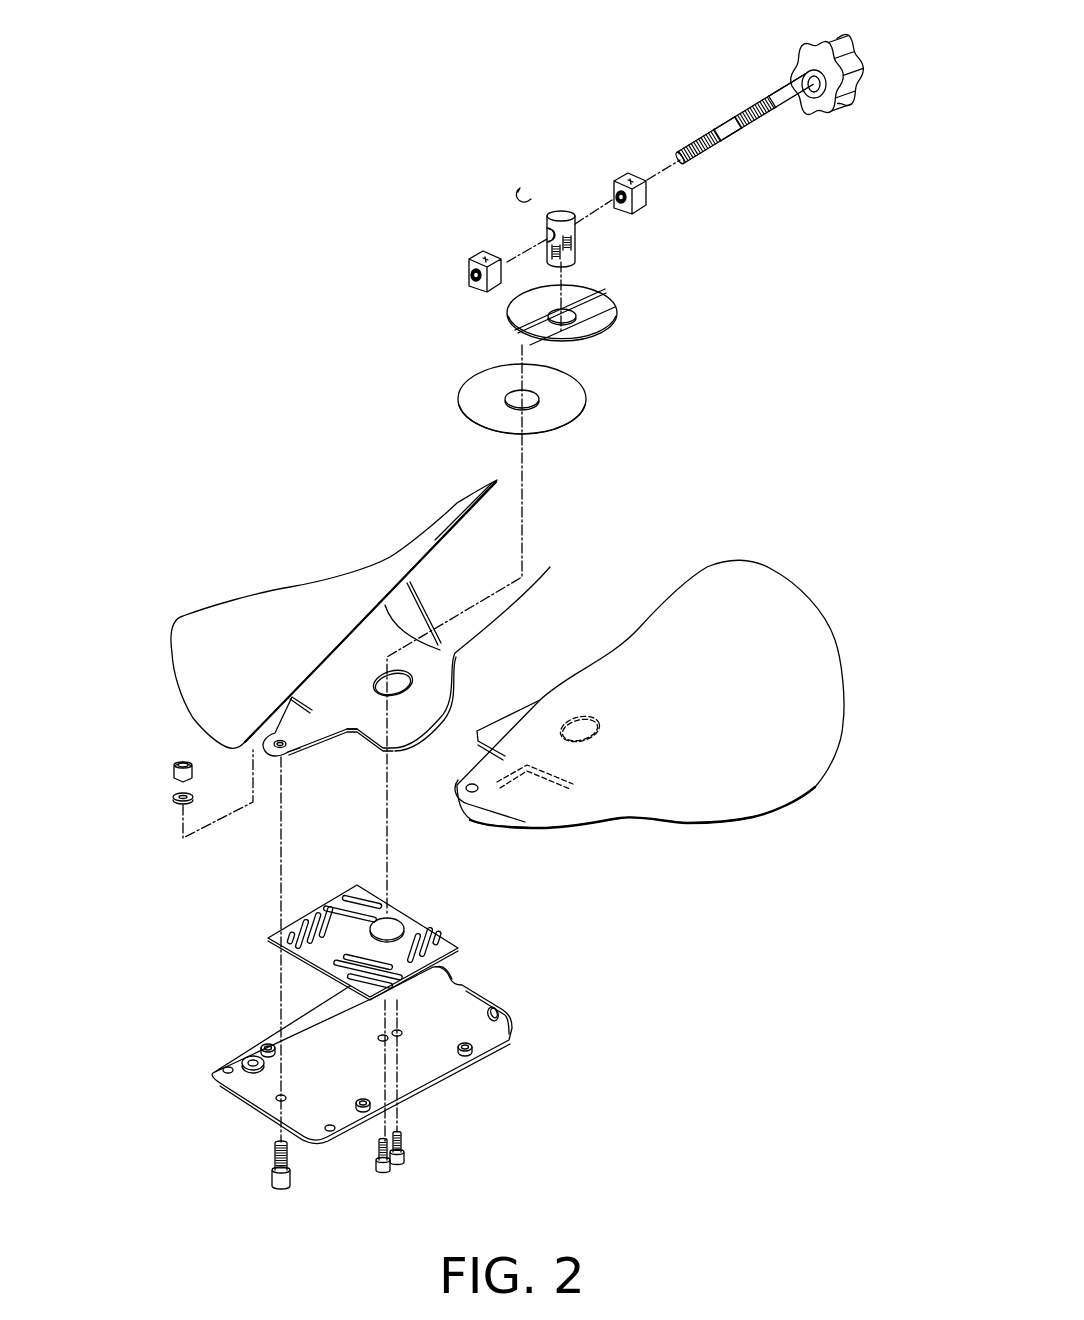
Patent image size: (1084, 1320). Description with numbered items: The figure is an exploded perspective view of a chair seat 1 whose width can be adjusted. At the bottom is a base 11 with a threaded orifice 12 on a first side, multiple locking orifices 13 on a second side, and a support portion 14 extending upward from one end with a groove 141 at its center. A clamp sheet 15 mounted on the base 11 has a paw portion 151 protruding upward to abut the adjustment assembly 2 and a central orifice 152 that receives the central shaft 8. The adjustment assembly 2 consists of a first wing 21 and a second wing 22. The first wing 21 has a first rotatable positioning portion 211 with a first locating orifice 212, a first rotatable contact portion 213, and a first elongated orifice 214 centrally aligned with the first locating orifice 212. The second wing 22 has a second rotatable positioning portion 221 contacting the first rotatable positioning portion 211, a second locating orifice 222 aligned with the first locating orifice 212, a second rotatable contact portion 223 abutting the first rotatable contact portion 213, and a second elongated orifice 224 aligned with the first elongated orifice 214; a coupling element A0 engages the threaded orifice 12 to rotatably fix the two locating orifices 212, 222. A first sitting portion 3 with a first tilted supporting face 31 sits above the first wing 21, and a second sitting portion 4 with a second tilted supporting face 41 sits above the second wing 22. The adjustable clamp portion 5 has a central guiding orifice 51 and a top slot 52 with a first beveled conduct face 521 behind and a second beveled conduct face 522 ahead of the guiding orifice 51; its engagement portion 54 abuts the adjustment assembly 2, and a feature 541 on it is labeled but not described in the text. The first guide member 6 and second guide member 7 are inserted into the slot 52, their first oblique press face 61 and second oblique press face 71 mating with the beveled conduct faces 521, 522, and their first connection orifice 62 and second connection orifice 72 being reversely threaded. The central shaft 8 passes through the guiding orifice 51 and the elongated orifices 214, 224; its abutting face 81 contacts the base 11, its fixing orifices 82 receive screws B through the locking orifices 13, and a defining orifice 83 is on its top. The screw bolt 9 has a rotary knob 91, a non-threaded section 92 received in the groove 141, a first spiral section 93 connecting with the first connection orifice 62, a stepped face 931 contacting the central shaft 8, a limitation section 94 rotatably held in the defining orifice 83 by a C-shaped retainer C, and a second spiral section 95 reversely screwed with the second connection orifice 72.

The chair seat 1 is at (334, 320).
The adjustment assembly 2 is at (547, 516).
The first wing 21 is at (395, 699).
The first rotatable positioning portion 211 is at (298, 735).
The first locating orifice 212 is at (272, 745).
The first rotatable contact portion 213 is at (378, 735).
The first elongated orifice 214 is at (398, 686).
The second wing 22 is at (530, 724).
The second rotatable positioning portion 221 is at (503, 792).
The second locating orifice 222 is at (462, 795).
The second rotatable contact portion 223 is at (503, 722).
The second elongated orifice 224 is at (582, 718).
The first sitting portion 3 is at (296, 614).
The first tilted supporting face 31 is at (287, 605).
The second sitting portion 4 is at (658, 664).
The second tilted supporting face 41 is at (713, 612).
The adjustable clamp portion 5 is at (561, 332).
The guiding orifice 51 is at (582, 337).
The slot 52 is at (540, 332).
The first beveled conduct face 521 is at (594, 302).
The second beveled conduct face 522 is at (525, 345).
The engagement portion 54 is at (523, 412).
The washer hole 541 is at (512, 400).
The first guide member 6 is at (640, 148).
The first oblique press face 61 is at (641, 205).
The first connection orifice 62 is at (614, 192).
The second guide member 7 is at (437, 255).
The second oblique press face 71 is at (488, 290).
The second connection orifice 72 is at (476, 275).
The central shaft 8 is at (582, 183).
The abutting face 81 is at (580, 262).
The fixing orifices 82 is at (577, 240).
The defining orifice 83 is at (545, 232).
The screw bolt 9 is at (768, 106).
The rotary knob 91 is at (843, 62).
The non-threaded section 92 is at (787, 98).
The first spiral section 93 is at (770, 118).
The stepped face 931 is at (731, 130).
The limitation section 94 is at (722, 128).
The second spiral section 95 is at (690, 150).
The base 11 is at (381, 1065).
The threaded orifice 12 is at (278, 1097).
The locking orifices 13 is at (398, 1036).
The support portion 14 is at (515, 995).
The groove 141 is at (450, 975).
The clamp sheet 15 is at (305, 951).
The paw portion 151 is at (300, 935).
The central orifice 152 is at (367, 932).
The coupling element A0 is at (272, 1162).
The screws B is at (378, 1150).
The C-shaped retainer C is at (517, 190).